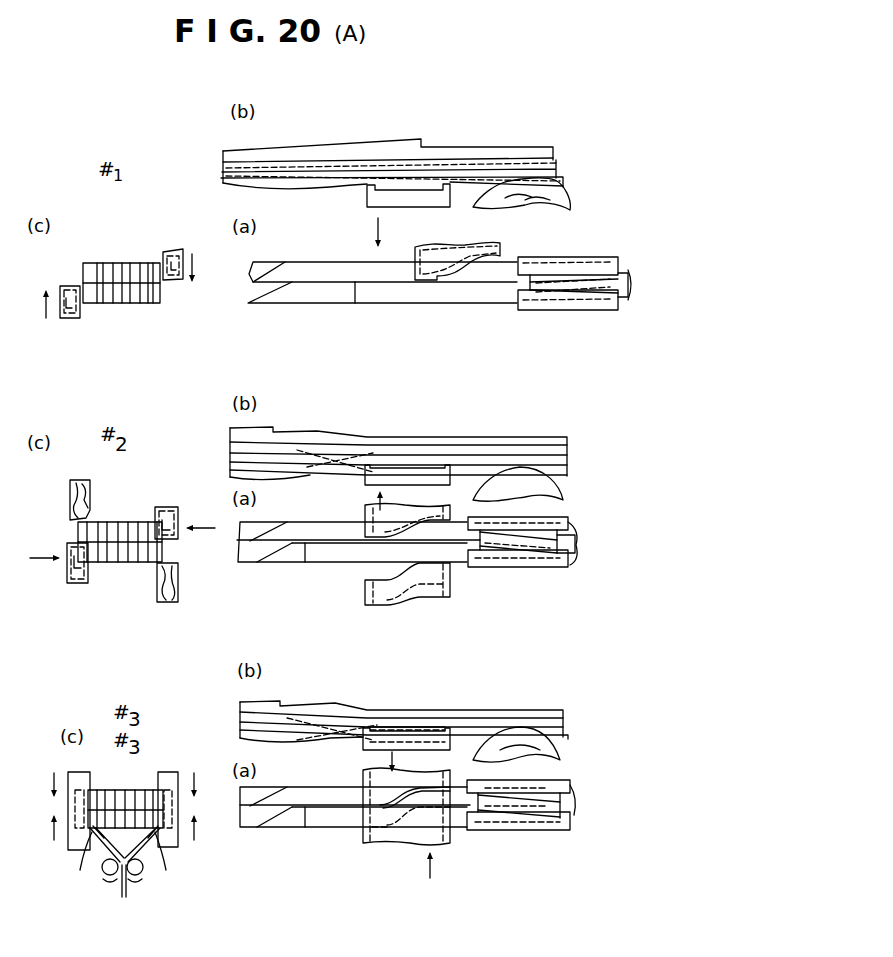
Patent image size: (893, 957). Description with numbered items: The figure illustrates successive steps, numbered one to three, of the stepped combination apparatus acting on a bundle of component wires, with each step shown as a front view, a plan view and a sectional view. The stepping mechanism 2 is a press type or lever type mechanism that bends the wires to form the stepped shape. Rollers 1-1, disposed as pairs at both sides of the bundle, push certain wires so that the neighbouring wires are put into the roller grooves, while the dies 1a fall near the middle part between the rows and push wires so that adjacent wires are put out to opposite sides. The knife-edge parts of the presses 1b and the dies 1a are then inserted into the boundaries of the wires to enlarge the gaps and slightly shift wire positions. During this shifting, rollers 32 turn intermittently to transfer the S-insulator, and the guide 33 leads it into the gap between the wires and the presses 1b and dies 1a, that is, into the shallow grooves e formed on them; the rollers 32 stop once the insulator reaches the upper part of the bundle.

The stepping mechanism 2 is at (219, 134).
The dies 1a is at (450, 233).
The presses 1b is at (72, 320).
The rollers 1-1 is at (560, 197).
The grooves e is at (427, 725).
The rollers 32 is at (158, 890).
The guide 33 is at (84, 856).